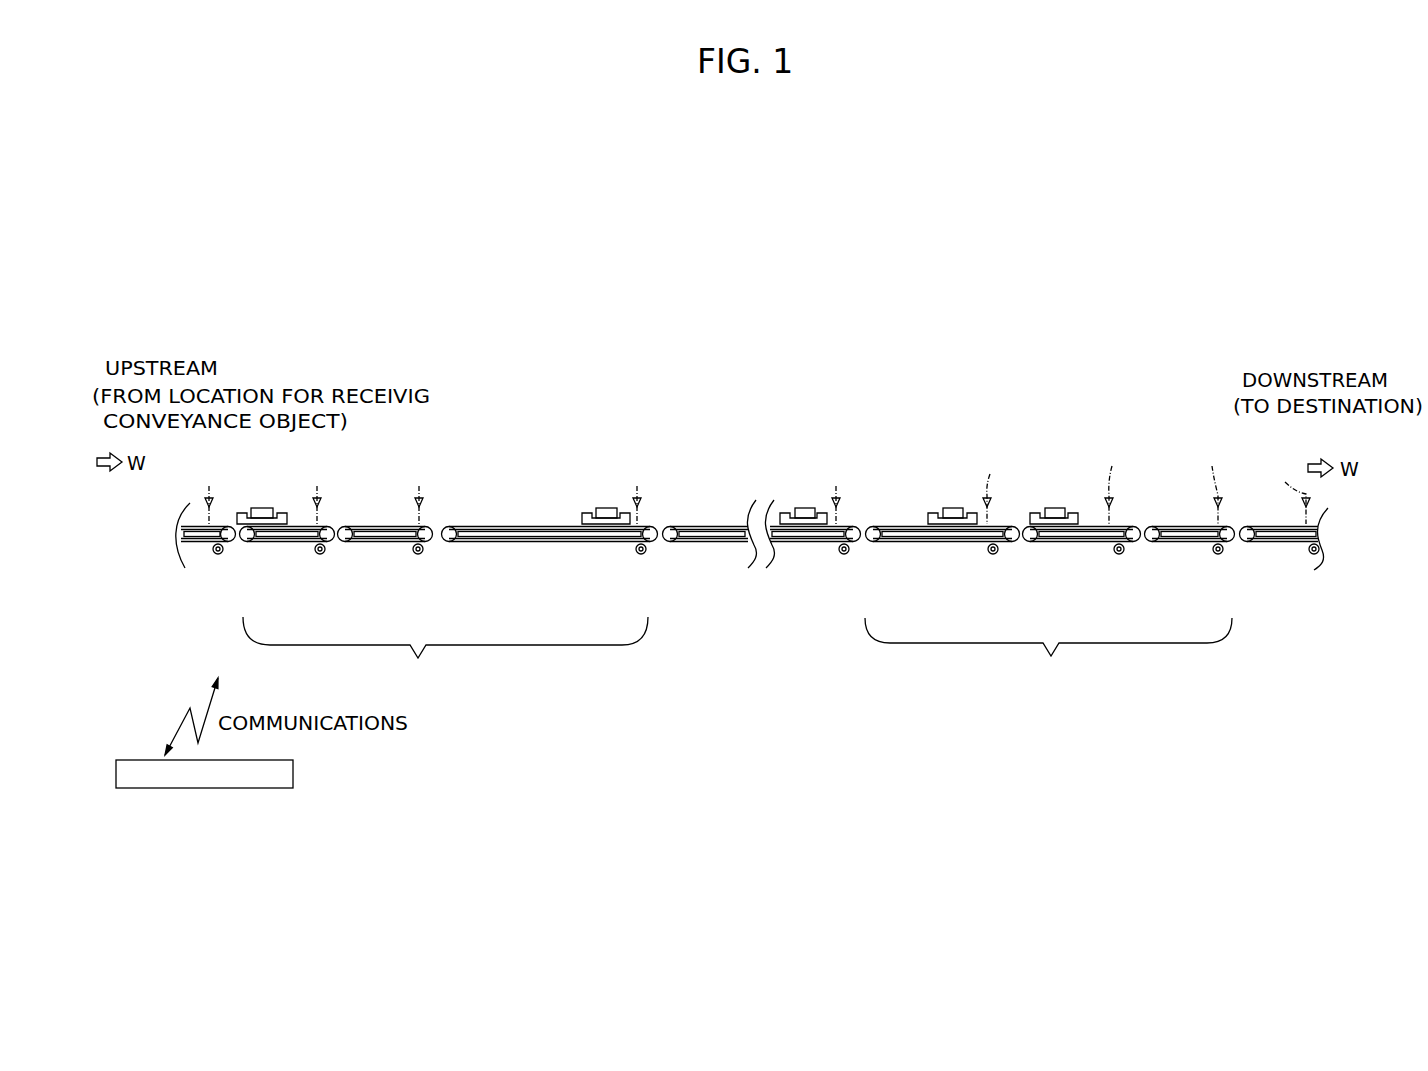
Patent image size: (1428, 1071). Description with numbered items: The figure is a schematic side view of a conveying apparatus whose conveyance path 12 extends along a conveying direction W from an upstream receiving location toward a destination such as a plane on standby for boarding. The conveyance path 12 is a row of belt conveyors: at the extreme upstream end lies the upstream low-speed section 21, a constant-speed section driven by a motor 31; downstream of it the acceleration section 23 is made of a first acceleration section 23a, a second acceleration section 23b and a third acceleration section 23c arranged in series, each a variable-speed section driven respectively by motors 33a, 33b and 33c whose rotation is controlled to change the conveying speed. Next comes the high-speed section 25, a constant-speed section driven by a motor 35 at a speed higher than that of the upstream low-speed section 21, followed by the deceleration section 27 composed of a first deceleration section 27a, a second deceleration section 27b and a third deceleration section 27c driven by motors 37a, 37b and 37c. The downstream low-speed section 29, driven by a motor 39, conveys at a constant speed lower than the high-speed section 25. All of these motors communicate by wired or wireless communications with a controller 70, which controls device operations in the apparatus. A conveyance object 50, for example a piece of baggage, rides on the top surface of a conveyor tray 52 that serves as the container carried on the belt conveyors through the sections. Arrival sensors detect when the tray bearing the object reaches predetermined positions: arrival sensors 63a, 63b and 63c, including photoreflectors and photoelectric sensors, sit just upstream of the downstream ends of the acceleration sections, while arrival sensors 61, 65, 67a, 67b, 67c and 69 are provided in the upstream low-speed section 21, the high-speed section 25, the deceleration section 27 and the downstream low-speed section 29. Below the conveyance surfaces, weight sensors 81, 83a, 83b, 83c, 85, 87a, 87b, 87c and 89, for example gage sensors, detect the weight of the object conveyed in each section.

The conveyance path 12 is at (522, 438).
The upstream low-speed section 21 is at (202, 557).
The acceleration section 23 is at (457, 607).
The first acceleration section 23a is at (287, 571).
The second acceleration section 23b is at (385, 574).
The third acceleration section 23c is at (550, 574).
The high-speed section 25 is at (762, 551).
The deceleration section 27 is at (1054, 609).
The first deceleration section 27a is at (943, 578).
The second deceleration section 27b is at (1082, 578).
The third deceleration section 27c is at (1190, 569).
The downstream low-speed section 29 is at (1284, 559).
The motor 31 is at (220, 554).
The motor 33a is at (322, 554).
The motor 33b is at (421, 554).
The motor 33c is at (643, 554).
The motor 35 is at (846, 554).
The motor 37a is at (994, 554).
The motor 37b is at (1120, 554).
The motor 37c is at (1219, 554).
The motor 39 is at (1313, 554).
The conveyance object 50 is at (259, 508).
The conveyor tray 52 is at (284, 512).
The arrival sensor 61 is at (217, 494).
The arrival sensor 63a is at (330, 494).
The arrival sensor 63b is at (432, 494).
The arrival sensor 63c is at (648, 494).
The arrival sensor 65 is at (845, 493).
The arrival sensor 67a is at (994, 488).
The arrival sensor 67b is at (1123, 484).
The arrival sensor 67c is at (1213, 484).
The arrival sensor 69 is at (1291, 492).
The controller 70 is at (293, 775).
The weight sensor 81 is at (201, 541).
The weight sensor 83a is at (293, 538).
The weight sensor 83b is at (394, 538).
The weight sensor 83c is at (547, 538).
The weight sensor 85 is at (733, 538).
The weight sensor 87a is at (931, 538).
The weight sensor 87b is at (1081, 538).
The weight sensor 87c is at (1189, 538).
The weight sensor 89 is at (1291, 538).